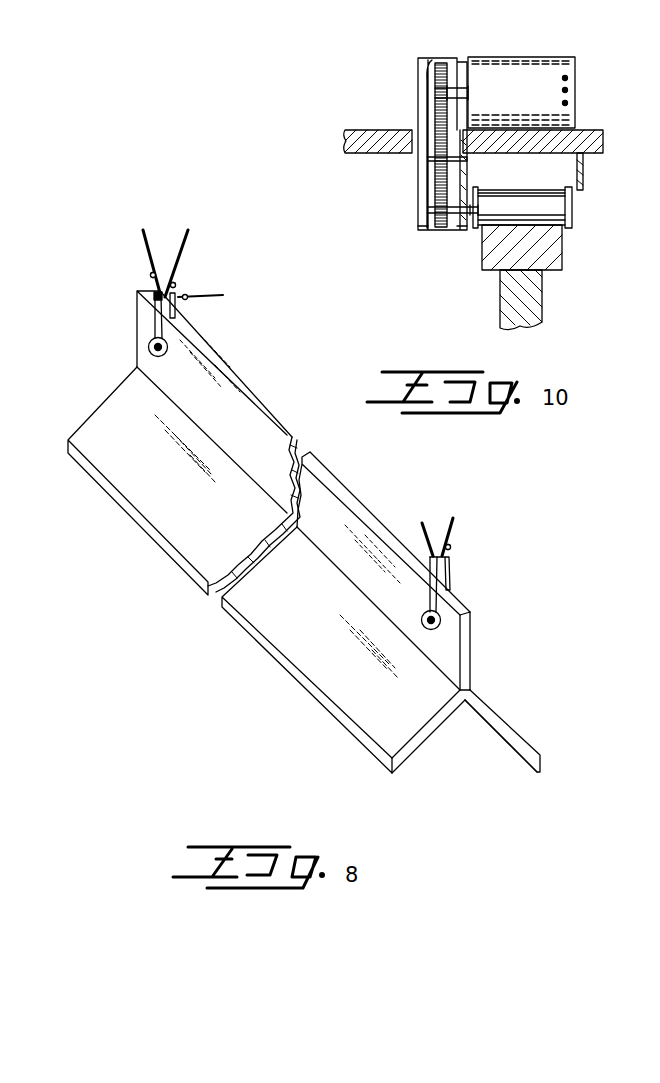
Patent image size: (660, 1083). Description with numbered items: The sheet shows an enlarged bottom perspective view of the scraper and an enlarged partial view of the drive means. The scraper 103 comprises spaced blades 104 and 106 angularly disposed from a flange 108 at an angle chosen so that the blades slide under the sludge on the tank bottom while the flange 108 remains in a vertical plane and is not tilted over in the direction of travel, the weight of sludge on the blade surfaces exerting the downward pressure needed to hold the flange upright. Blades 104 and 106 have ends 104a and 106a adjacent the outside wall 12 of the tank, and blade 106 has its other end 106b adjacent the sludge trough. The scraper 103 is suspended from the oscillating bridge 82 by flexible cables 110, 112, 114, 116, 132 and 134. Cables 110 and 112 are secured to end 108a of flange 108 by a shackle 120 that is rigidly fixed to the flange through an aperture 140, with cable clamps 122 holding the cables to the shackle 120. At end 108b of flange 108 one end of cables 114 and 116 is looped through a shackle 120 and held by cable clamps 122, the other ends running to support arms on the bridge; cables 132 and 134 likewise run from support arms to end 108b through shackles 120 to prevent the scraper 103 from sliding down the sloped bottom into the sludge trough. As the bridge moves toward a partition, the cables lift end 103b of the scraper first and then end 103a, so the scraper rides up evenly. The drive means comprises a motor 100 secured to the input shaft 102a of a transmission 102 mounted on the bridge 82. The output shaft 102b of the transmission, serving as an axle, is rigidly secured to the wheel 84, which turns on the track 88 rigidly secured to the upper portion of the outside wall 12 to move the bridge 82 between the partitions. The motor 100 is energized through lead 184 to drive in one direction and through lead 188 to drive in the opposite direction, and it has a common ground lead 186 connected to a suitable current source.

In FIG. 10, the outside wall 12 is at (530, 312).
In FIG. 10, the oscillating bridge 82 is at (603, 147).
In FIG. 10, the wheel 84 is at (512, 212).
In FIG. 10, the track 88 is at (498, 258).
In FIG. 10, the motor 100 is at (517, 73).
In FIG. 10, the transmission 102 is at (410, 90).
In FIG. 10, the input shaft 102a is at (463, 88).
In FIG. 10, the output shaft 102b is at (467, 230).
In FIG. 10, the lead 184 is at (565, 78).
In FIG. 10, the common ground lead 186 is at (565, 90).
In FIG. 10, the lead 188 is at (565, 103).
In FIG. 8, the scraper 103 is at (286, 402).
In FIG. 8, the end of scraper 103a is at (467, 689).
In FIG. 8, the end of scraper 103b is at (136, 366).
In FIG. 8, the blade 104 is at (506, 706).
In FIG. 8, the end of blade 104a is at (540, 753).
In FIG. 8, the blade 106 is at (278, 612).
In FIG. 8, the end of blade 106a is at (415, 747).
In FIG. 8, the end of blade 106b is at (100, 414).
In FIG. 8, the flange 108 is at (323, 503).
In FIG. 8, the end of flange 108a is at (468, 637).
In FIG. 8, the end of flange 108b is at (143, 333).
In FIG. 8, the cable 110 is at (453, 519).
In FIG. 8, the cable 112 is at (427, 548).
In FIG. 8, the cable 114 is at (185, 236).
In FIG. 8, the cable 116 is at (142, 236).
In FIG. 8, the shackle 120 is at (180, 308).
In FIG. 8, the cable clamp 122 is at (160, 272).
In FIG. 8, the cable 132 is at (223, 295).
In FIG. 8, the cable 134 is at (156, 294).
In FIG. 8, the aperture 140 is at (166, 342).